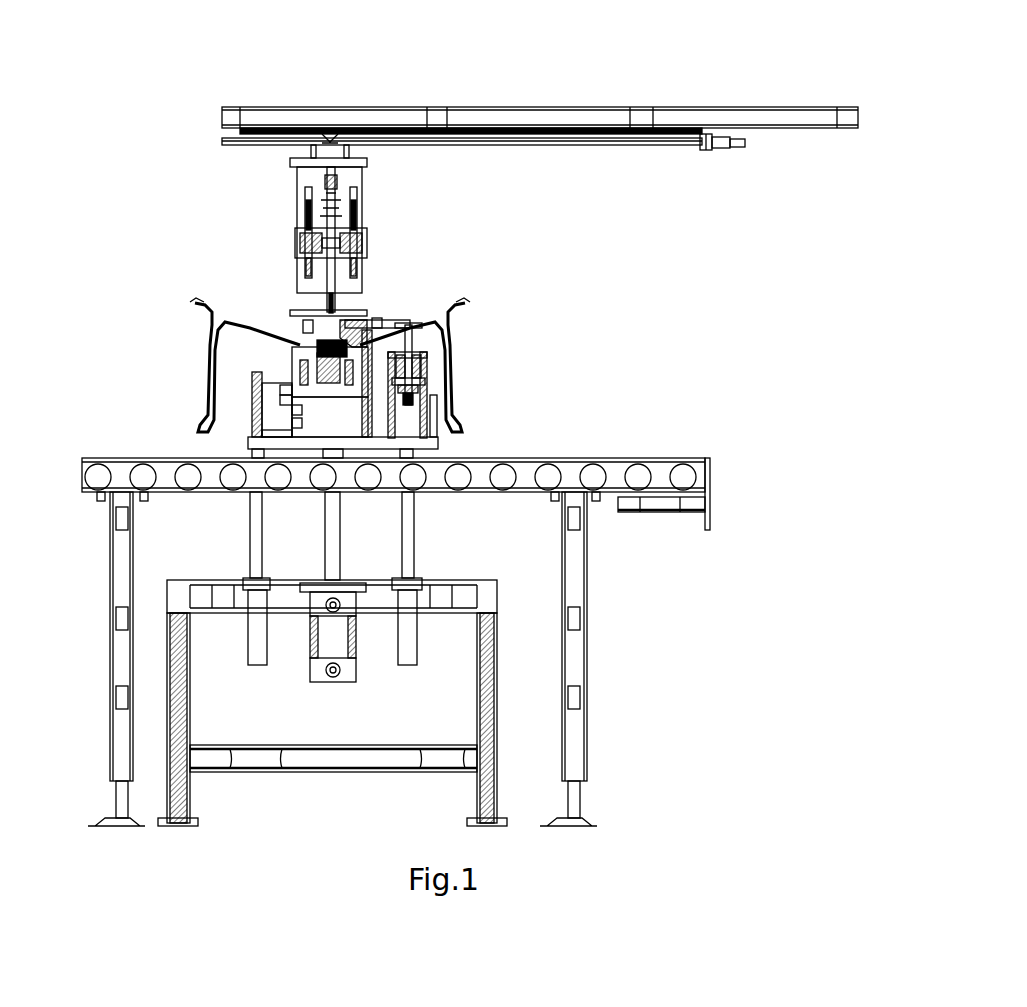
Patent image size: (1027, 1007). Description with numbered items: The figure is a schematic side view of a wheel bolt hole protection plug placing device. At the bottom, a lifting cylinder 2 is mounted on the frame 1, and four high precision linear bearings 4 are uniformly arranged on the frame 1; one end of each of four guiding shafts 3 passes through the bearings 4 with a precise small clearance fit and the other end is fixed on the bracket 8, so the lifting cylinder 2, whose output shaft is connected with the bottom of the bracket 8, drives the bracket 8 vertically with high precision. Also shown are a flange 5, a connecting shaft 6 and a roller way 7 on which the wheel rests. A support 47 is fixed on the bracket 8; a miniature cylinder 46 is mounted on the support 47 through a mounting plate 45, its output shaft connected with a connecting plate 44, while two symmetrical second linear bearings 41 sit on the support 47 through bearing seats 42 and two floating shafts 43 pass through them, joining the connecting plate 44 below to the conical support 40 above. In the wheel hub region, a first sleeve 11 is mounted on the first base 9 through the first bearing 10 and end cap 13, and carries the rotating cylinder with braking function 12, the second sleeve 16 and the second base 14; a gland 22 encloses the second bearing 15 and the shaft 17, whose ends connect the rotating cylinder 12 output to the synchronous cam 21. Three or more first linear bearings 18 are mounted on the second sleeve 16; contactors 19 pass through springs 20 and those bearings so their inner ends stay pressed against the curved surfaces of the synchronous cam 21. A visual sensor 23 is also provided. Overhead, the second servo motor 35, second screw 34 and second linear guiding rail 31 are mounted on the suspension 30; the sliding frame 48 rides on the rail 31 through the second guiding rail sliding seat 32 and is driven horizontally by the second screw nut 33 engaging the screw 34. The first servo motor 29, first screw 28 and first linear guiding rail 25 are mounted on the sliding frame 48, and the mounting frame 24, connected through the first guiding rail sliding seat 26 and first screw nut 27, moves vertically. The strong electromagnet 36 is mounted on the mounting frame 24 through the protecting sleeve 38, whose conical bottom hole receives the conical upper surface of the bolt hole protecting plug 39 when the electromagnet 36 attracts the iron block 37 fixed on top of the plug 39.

The frame 1 is at (177, 793).
The lifting cylinder 2 is at (325, 672).
The guiding shaft 3 is at (257, 660).
The high precision linear bearing 4 is at (255, 600).
The flange 5 is at (300, 598).
The connecting shaft 6 is at (325, 508).
The roller way 7 is at (120, 555).
The bracket 8 is at (248, 441).
The first base 9 is at (300, 455).
The first bearing 10 is at (300, 427).
The first sleeve 11 is at (290, 396).
The rotating cylinder with braking function 12 is at (257, 386).
The end cap 13 is at (305, 423).
The second base 14 is at (300, 412).
The second bearing 15 is at (295, 403).
The second sleeve 16 is at (282, 392).
The shaft 17 is at (298, 388).
The first linear bearing 18 is at (300, 378).
The contactor 19 is at (312, 372).
The spring 20 is at (320, 362).
The synchronous cam 21 is at (318, 352).
The gland 22 is at (305, 348).
The visual sensor 23 is at (298, 338).
The mounting frame 24 is at (300, 325).
The first linear guiding rail 25 is at (305, 312).
The first guiding rail sliding seat 26 is at (315, 298).
The first screw nut 27 is at (325, 300).
The first screw 28 is at (280, 117).
The first servo motor 29 is at (318, 125).
The suspension 30 is at (288, 130).
The second linear guiding rail 31 is at (304, 128).
The second guiding rail sliding seat 32 is at (326, 133).
The second screw nut 33 is at (343, 131).
The second screw 34 is at (445, 145).
The second servo motor 35 is at (720, 138).
The strong electromagnet 36 is at (377, 307).
The iron block 37 is at (382, 320).
The protecting sleeve 38 is at (385, 340).
The bolt hole protecting plug 39 is at (395, 330).
The conical support 40 is at (402, 340).
The second linear bearing 41 is at (425, 345).
The bearing seat 42 is at (420, 352).
The floating shaft 43 is at (430, 365).
The connecting plate 44 is at (450, 376).
The mounting plate 45 is at (420, 389).
The miniature cylinder 46 is at (408, 405).
The support 47 is at (462, 428).
The sliding frame 48 is at (347, 172).